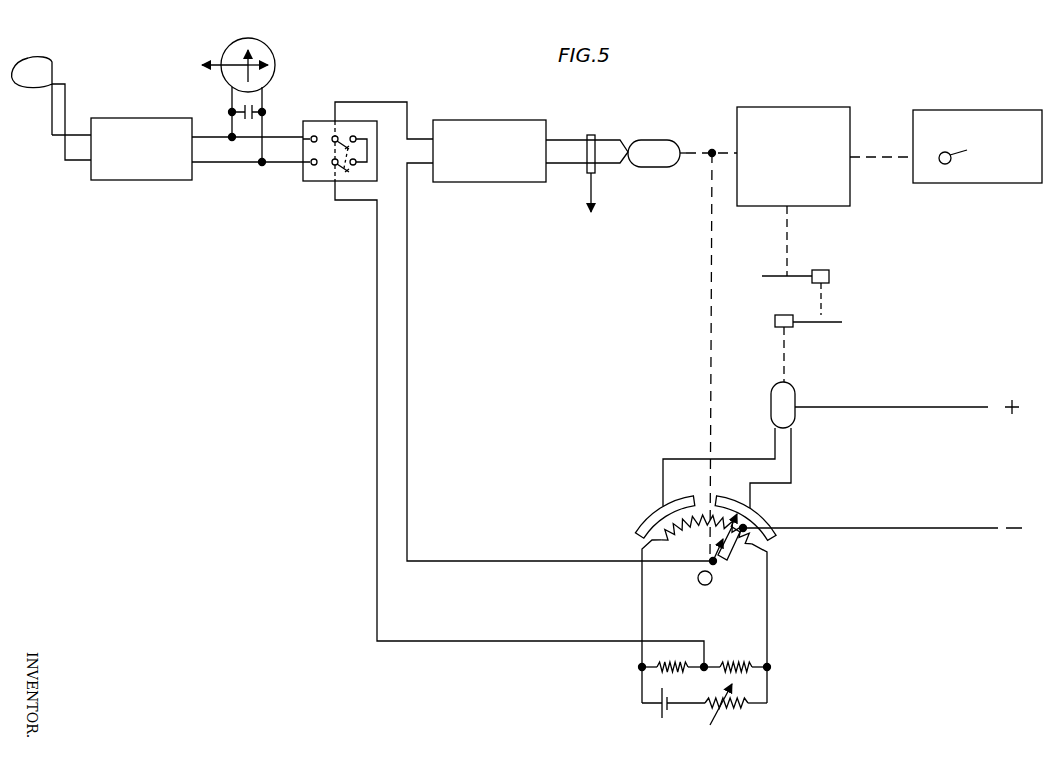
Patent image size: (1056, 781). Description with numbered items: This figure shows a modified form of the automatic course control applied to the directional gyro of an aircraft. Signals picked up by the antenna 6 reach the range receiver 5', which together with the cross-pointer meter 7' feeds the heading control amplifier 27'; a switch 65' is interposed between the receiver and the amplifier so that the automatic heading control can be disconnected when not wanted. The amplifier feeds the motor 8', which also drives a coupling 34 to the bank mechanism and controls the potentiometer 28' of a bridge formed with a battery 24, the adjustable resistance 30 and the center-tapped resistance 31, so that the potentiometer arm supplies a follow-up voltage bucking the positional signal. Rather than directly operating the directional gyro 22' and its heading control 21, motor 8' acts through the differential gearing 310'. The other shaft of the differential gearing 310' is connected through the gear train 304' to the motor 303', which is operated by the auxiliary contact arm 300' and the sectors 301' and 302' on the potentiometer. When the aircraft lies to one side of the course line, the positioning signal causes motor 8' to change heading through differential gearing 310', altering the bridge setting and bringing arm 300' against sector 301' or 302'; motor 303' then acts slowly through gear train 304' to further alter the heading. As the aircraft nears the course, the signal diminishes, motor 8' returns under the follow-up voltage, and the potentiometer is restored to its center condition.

The antenna 6 is at (19, 78).
The range receiver 5' is at (141, 164).
The cross-pointer meter 7' is at (190, 53).
The switch 65' is at (335, 168).
The heading control amplifier 27' is at (489, 133).
The bank control coupling 34 is at (591, 136).
The motor 8' is at (656, 137).
The differential gearing 310' is at (794, 141).
The heading control 21 is at (965, 156).
The directional gyro 22' is at (977, 162).
The gear train 304' is at (823, 294).
The motor 303' is at (814, 401).
The sector 301' is at (650, 512).
The sector 302' is at (763, 516).
The potentiometer 28' is at (730, 609).
The auxiliary contact arm 300' is at (860, 551).
The center-tapped resistance 31 is at (728, 672).
The battery 24 is at (657, 720).
The adjustable resistance 30 is at (732, 715).